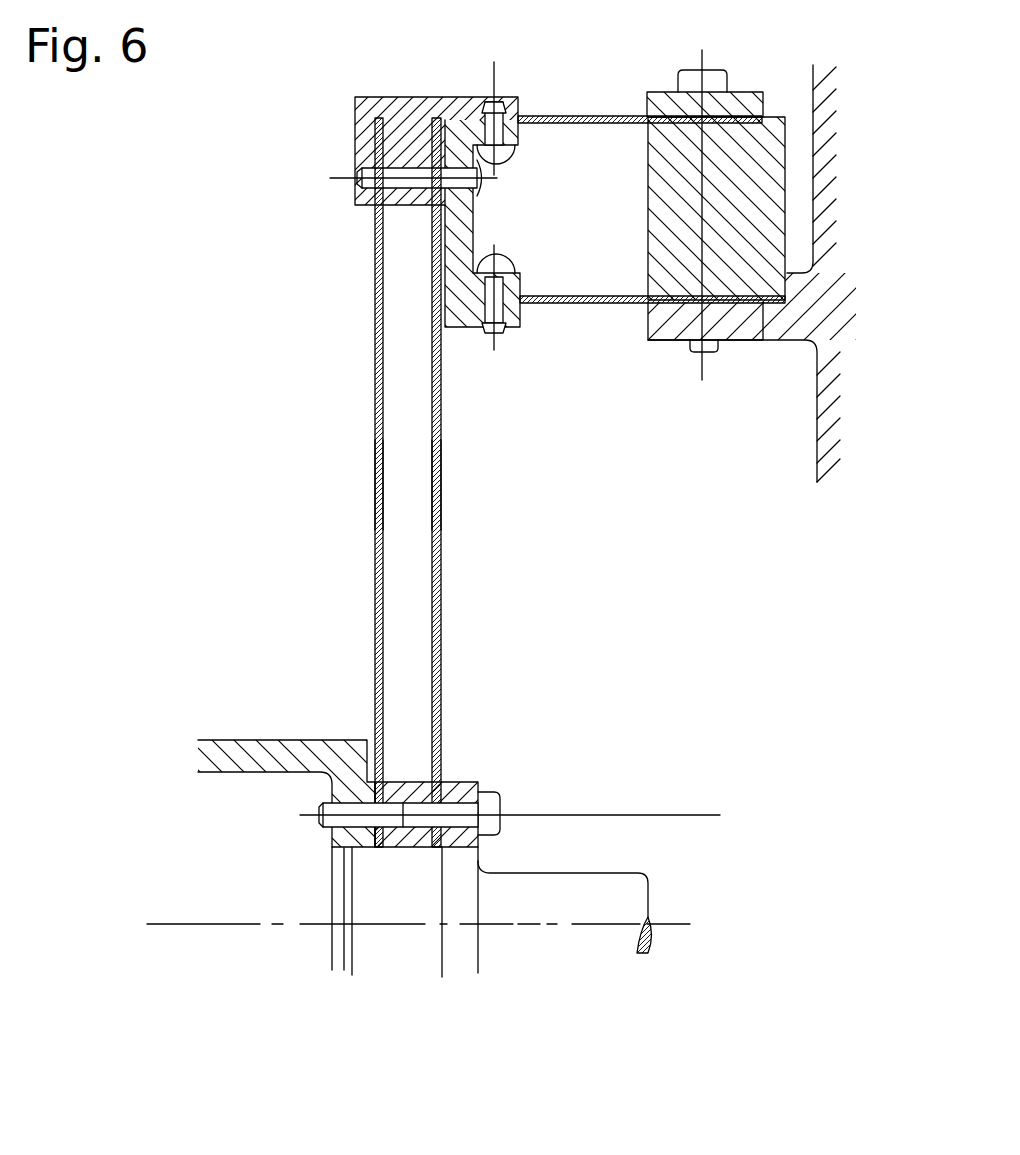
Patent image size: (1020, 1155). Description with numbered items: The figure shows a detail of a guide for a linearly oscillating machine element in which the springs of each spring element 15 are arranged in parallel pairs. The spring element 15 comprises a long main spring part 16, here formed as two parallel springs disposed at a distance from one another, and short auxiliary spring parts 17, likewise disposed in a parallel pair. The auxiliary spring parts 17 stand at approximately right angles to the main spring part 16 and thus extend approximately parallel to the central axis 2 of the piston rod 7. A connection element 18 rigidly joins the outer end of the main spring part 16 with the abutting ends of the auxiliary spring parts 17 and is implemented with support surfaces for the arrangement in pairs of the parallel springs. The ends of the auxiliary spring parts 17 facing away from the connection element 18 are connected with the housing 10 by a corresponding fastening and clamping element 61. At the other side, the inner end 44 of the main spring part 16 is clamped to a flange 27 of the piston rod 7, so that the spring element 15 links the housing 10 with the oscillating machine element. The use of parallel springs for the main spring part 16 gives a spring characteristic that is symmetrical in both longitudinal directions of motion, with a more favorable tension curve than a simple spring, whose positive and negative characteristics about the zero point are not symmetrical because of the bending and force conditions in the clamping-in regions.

The central axis 2 is at (670, 931).
The piston rod 7 is at (500, 897).
The housing 10 is at (832, 297).
The spring element 15 is at (343, 342).
The main spring part 16 is at (425, 517).
The auxiliary spring part 17 is at (553, 120).
The connection element 18 is at (372, 112).
The flange 27 is at (345, 745).
The inner end 44 is at (448, 712).
The fastening and clamping element 61 is at (648, 342).